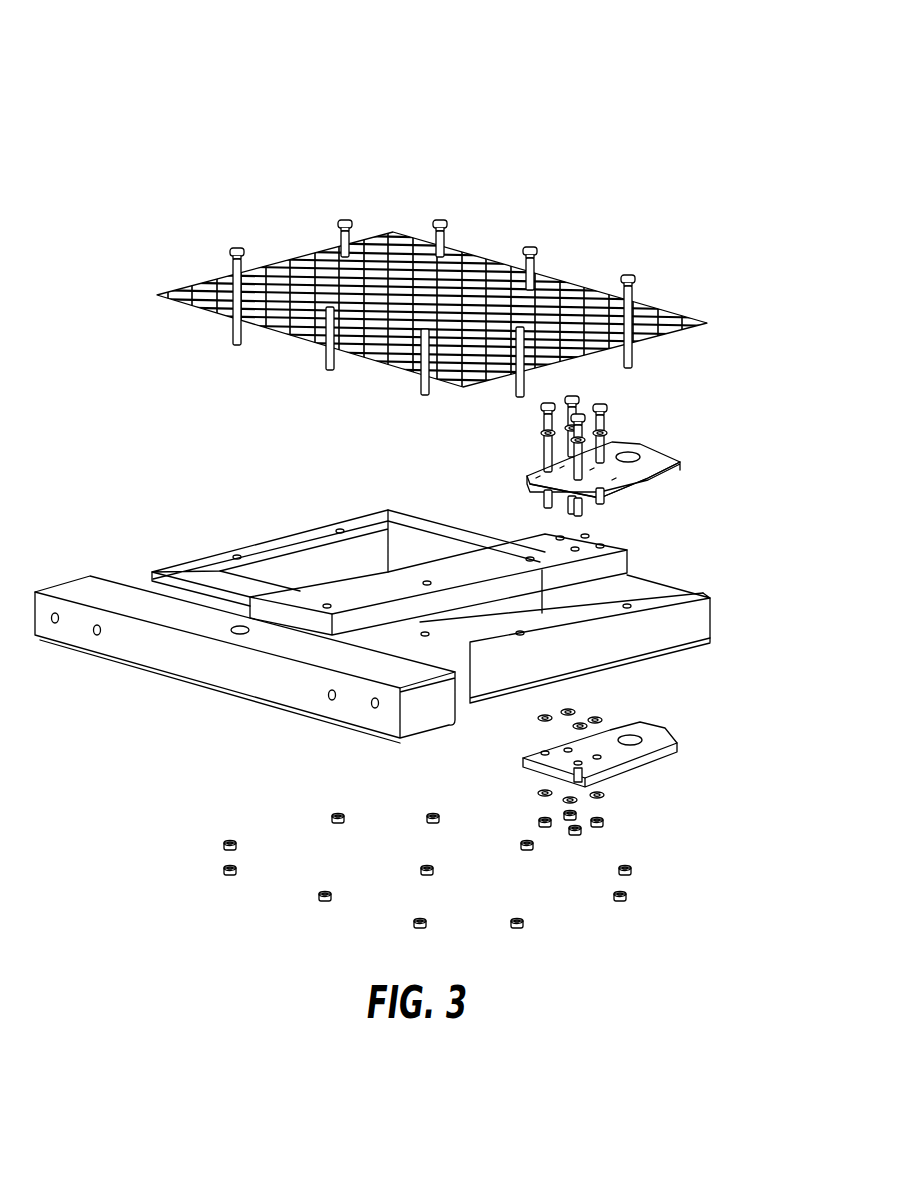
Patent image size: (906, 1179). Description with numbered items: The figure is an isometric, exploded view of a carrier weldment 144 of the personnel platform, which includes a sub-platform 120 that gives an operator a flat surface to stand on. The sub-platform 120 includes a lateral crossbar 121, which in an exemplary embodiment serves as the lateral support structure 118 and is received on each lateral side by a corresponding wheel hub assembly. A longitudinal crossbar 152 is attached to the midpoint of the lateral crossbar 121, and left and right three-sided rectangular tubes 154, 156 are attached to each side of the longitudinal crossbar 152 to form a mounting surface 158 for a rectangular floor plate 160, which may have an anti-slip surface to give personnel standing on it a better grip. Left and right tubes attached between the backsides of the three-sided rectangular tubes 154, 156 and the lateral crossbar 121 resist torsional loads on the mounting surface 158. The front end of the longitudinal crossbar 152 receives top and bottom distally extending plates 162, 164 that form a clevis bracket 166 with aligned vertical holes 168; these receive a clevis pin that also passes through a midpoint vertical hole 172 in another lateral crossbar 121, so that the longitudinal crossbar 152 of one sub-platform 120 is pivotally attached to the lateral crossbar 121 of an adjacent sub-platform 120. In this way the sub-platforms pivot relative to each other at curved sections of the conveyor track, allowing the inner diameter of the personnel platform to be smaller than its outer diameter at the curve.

The carrier weldment 144 is at (103, 62).
The sub-platform 120 is at (410, 198).
The rectangular floor plate 160 is at (680, 335).
The top distally extending plate 162 is at (547, 453).
The aligned vertical holes 168 is at (612, 463).
The clevis bracket 166 is at (694, 492).
The longitudinal crossbar 152 is at (455, 575).
The left three-sided rectangular tube 154 is at (268, 545).
The right three-sided rectangular tube 156 is at (567, 650).
The mounting surface 158 is at (630, 563).
The midpoint vertical hole 172 is at (235, 625).
The lateral support structure 118 is at (140, 585).
The lateral crossbar 121 is at (88, 592).
The bottom distally extending plate 164 is at (625, 772).